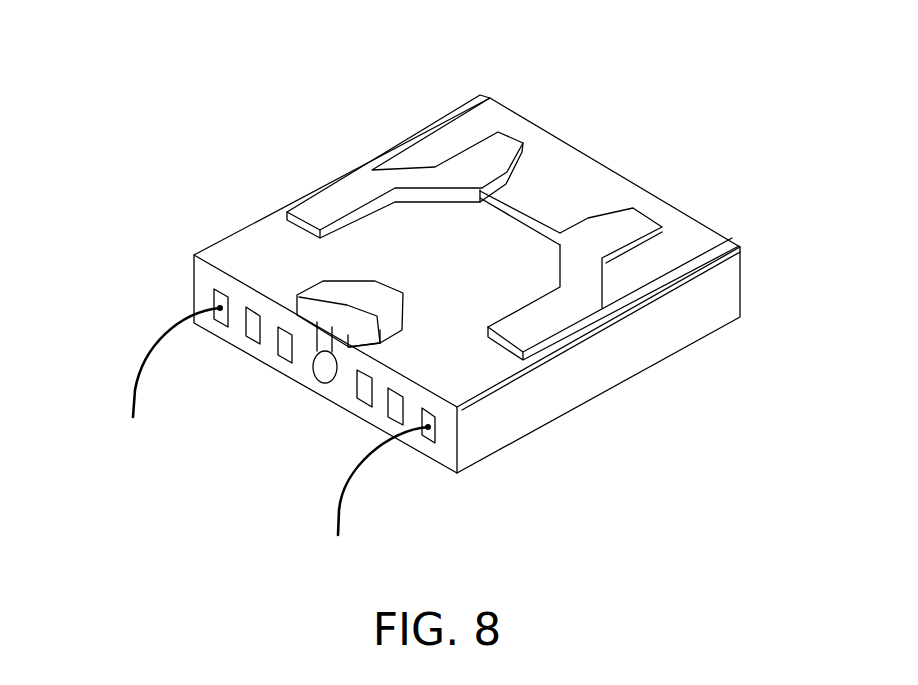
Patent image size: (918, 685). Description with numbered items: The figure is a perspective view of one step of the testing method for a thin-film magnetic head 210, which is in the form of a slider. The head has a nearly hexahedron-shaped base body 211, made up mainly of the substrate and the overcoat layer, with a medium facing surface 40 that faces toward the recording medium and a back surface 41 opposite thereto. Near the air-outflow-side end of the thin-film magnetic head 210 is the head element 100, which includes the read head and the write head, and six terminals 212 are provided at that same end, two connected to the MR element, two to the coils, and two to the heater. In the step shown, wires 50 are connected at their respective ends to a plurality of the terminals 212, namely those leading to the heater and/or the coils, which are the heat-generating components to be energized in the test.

The thin-film magnetic head 210 is at (420, 285).
The base body 211 is at (561, 135).
The back surface 41 is at (525, 437).
The terminals 212 is at (212, 313).
The wires 50 is at (137, 387).
The medium facing surface 40 is at (345, 303).
The head element 100 is at (320, 355).